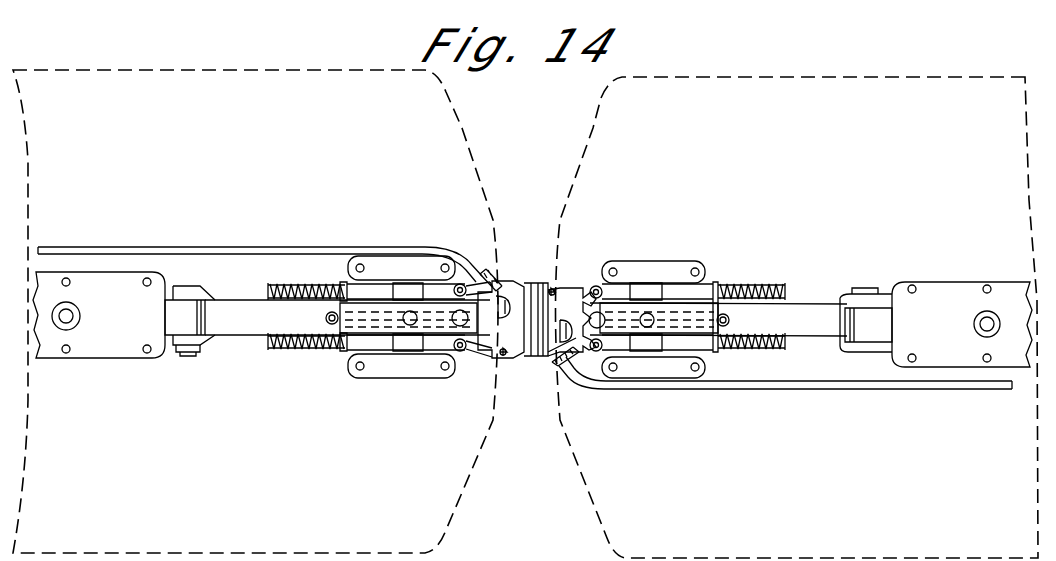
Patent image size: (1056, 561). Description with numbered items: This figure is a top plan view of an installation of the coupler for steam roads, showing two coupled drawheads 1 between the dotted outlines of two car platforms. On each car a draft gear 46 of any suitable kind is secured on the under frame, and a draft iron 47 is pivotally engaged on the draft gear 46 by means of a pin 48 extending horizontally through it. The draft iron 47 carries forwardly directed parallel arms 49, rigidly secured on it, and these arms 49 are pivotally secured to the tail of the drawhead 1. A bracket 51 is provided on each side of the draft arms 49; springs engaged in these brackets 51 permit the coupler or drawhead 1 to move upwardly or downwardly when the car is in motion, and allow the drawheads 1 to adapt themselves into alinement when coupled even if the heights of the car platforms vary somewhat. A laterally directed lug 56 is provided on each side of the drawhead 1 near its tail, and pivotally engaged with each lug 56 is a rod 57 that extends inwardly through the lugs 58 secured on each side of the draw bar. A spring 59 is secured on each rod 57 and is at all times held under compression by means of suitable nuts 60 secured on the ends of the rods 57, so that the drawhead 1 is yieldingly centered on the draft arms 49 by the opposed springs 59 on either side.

The drawhead 1 is at (536, 356).
The draft gear 46 is at (134, 335).
The draft iron 47 is at (193, 347).
The pin 48 is at (186, 348).
The parallel arms 49 is at (243, 317).
The bracket 51 is at (412, 268).
The laterally directed lug 56 is at (462, 284).
The rod 57 is at (375, 340).
The lugs 58 is at (339, 283).
The spring 59 is at (297, 348).
The nuts 60 is at (271, 347).